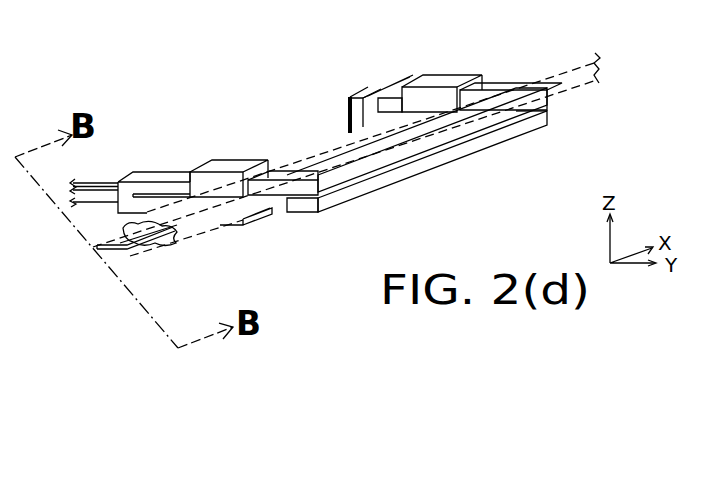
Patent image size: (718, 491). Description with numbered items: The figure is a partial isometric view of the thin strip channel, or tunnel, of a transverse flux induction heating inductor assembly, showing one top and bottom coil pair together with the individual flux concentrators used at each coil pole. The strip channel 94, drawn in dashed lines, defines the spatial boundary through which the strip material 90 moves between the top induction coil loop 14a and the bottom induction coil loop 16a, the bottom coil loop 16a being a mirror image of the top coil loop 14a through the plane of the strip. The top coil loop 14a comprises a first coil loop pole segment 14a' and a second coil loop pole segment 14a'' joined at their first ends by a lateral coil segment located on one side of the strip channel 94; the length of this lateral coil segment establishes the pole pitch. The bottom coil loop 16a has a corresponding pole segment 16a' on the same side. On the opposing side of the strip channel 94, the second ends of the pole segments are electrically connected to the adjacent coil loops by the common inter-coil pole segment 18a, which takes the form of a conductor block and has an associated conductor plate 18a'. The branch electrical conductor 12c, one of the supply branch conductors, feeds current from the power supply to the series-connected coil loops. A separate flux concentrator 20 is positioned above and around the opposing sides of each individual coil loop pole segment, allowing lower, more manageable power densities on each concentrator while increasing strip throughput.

The branch electrical conductor 12c is at (97, 192).
The flux concentrator 20 is at (235, 163).
The first coil loop pole segment 14a' is at (286, 157).
The second coil loop pole segment 14a'' is at (511, 67).
The induction coil loop 14a is at (453, 140).
The induction coil loop 16a is at (449, 161).
The coil loop pole segment 16a' is at (321, 227).
The common inter-coil pole segment 18a is at (385, 78).
The conductor plate 18a' is at (336, 99).
The strip material 90 is at (108, 247).
The strip channel 94 is at (197, 228).